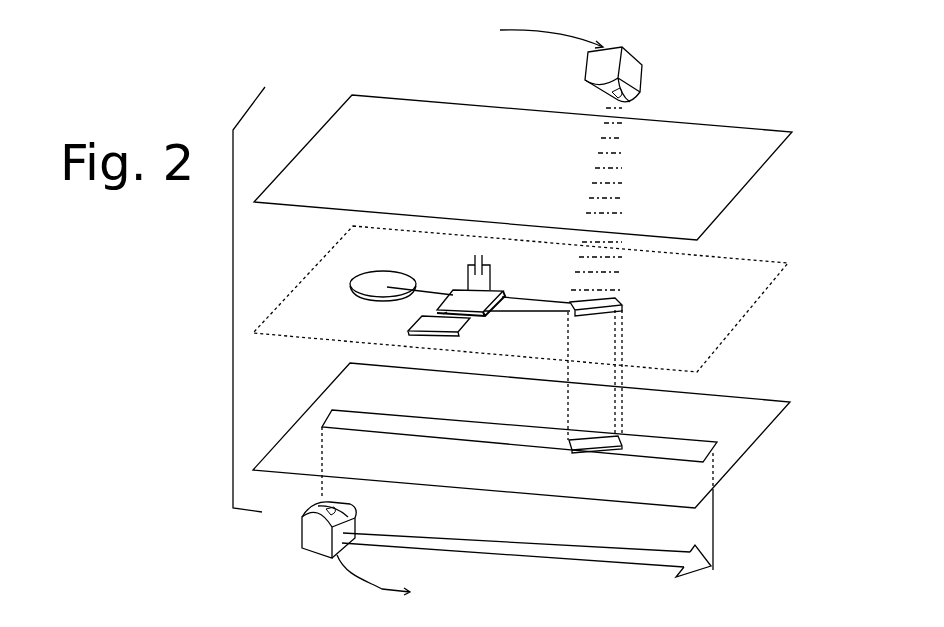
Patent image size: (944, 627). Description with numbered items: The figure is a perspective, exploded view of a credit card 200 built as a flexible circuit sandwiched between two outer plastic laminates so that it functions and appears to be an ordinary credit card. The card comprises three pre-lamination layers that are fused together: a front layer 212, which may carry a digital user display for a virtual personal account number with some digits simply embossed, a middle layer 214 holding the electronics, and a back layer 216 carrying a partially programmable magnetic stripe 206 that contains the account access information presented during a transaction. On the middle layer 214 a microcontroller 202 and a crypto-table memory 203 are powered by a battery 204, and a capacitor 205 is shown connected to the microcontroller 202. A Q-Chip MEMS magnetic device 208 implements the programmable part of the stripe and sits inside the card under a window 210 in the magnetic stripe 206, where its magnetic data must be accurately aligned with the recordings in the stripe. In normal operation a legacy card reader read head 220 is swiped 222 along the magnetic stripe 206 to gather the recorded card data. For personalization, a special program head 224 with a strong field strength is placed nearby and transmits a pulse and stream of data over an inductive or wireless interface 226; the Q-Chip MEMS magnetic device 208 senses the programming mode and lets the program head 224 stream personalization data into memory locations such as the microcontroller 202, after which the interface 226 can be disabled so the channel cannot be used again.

The credit card 200 is at (233, 307).
The microcontroller 202 is at (464, 288).
The crypto-table memory 203 is at (456, 328).
The battery 204 is at (354, 292).
The capacitor 205 is at (490, 272).
The magnetic stripe 206 is at (420, 420).
The Q-Chip MEMS magnetic device 208 is at (615, 298).
The window 210 is at (610, 438).
The front layer 212 is at (792, 132).
The middle layer 214 is at (786, 263).
The back layer 216 is at (790, 402).
The read head 220 is at (303, 523).
The swipe 222 is at (556, 558).
The program head 224 is at (596, 60).
The inductive or wireless interface 226 is at (596, 185).